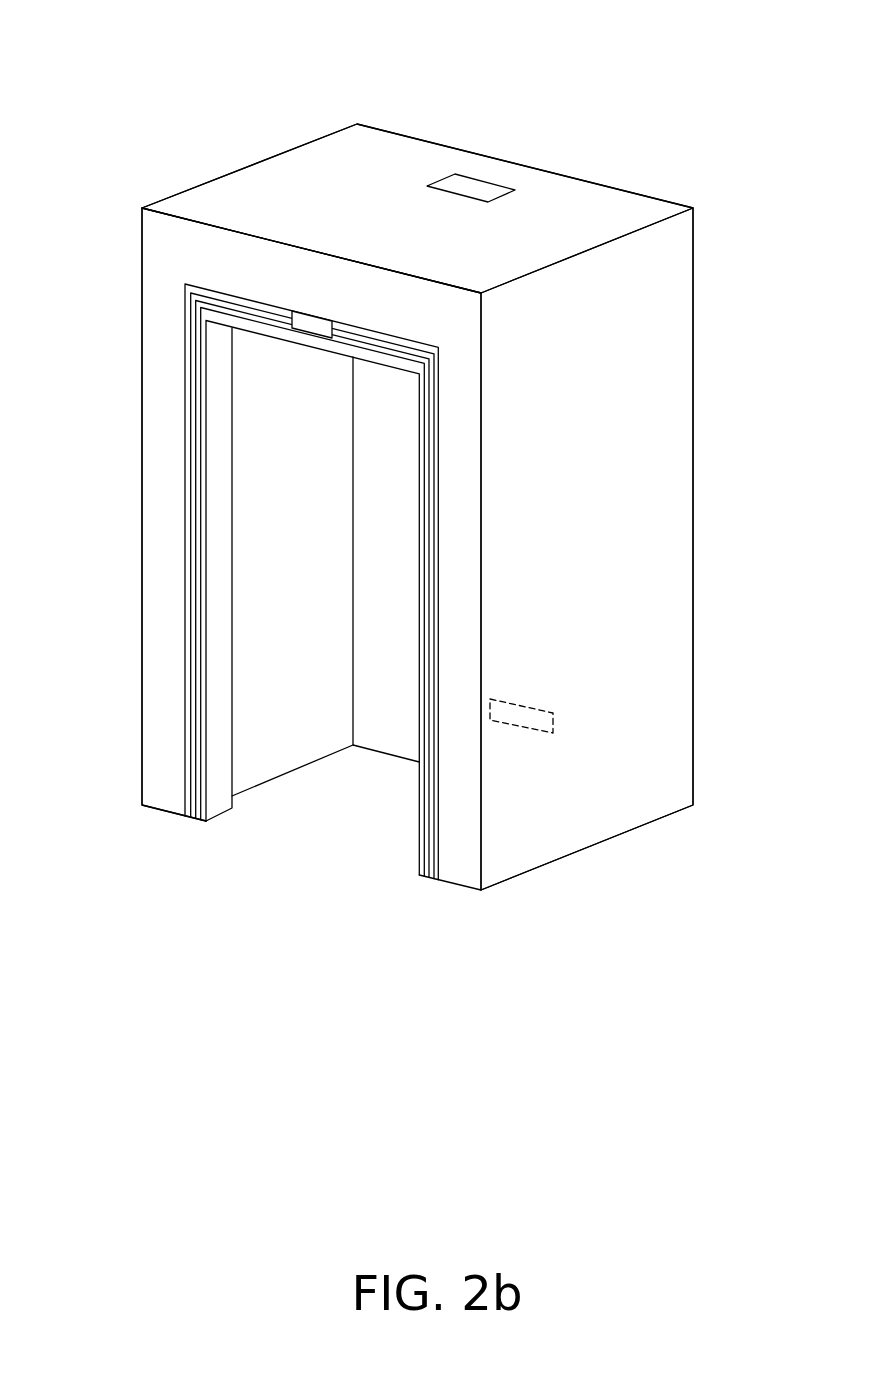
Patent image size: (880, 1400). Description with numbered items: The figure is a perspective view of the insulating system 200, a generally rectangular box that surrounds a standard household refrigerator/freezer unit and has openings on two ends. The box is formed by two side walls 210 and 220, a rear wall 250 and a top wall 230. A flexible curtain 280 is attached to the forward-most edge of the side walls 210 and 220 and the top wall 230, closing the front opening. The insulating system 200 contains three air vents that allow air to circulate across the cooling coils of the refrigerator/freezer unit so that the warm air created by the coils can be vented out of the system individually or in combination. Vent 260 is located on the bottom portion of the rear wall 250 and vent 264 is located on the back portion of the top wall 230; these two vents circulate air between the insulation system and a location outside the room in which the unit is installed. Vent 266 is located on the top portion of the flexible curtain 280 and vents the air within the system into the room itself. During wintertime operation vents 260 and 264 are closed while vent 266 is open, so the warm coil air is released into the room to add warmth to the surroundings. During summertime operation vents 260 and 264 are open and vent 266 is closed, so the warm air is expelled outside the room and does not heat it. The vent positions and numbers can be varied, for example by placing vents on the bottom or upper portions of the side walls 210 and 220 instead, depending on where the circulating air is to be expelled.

The insulating system 200 is at (123, 113).
The side wall 210 is at (628, 571).
The side wall 220 is at (163, 401).
The top wall 230 is at (292, 188).
The rear wall 250 is at (378, 752).
The air vent 260 is at (553, 719).
The air vent 264 is at (482, 182).
The air vent 266 is at (290, 310).
The flexible curtain 280 is at (197, 677).